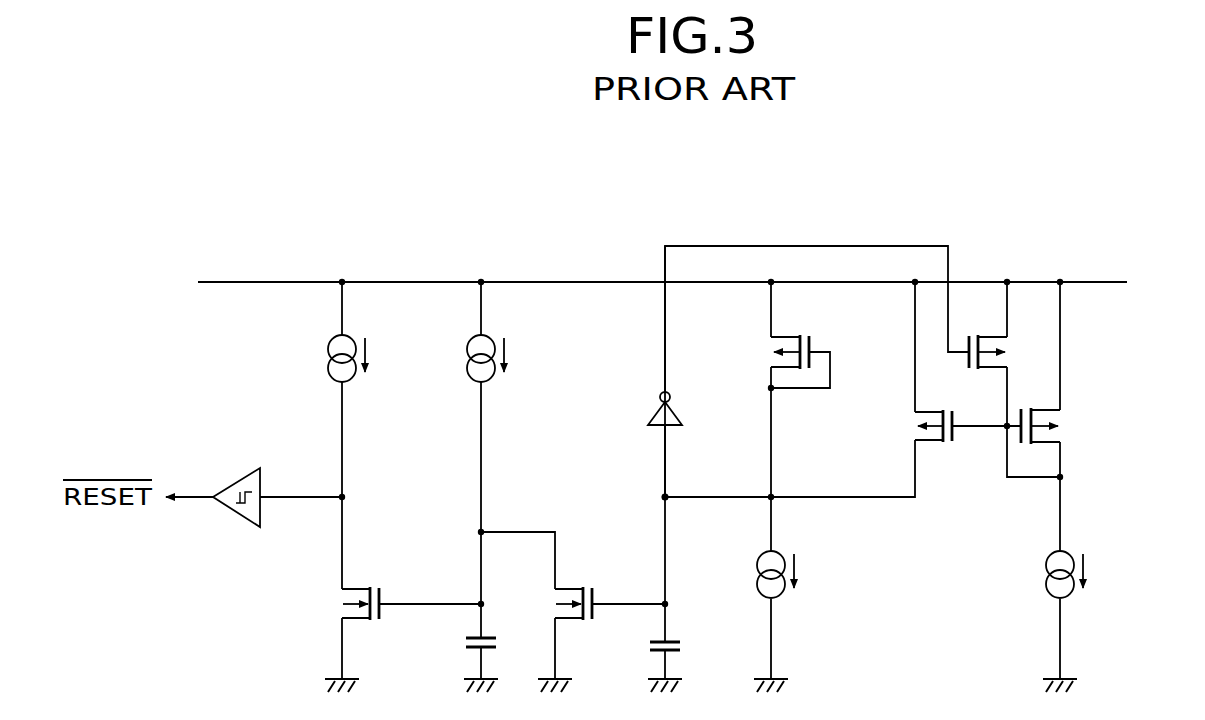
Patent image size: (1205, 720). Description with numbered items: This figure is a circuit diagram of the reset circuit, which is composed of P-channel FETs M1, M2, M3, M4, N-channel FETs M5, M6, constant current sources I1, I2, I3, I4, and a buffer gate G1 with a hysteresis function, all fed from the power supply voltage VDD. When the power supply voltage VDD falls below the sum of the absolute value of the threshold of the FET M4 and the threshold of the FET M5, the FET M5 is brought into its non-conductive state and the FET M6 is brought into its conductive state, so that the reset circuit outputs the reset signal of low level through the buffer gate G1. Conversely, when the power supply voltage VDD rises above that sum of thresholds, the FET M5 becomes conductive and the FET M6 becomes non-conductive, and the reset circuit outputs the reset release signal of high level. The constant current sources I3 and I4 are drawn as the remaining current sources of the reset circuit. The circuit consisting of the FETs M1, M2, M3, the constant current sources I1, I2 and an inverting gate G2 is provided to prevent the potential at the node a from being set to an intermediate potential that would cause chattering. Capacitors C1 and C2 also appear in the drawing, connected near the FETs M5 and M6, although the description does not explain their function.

The buffer gate G1 is at (238, 478).
The inverting gate G2 is at (678, 412).
The node a is at (668, 494).
The constant current source I1 is at (1077, 574).
The constant current source I2 is at (788, 574).
The constant current source I3 is at (498, 358).
The constant current source I4 is at (359, 358).
The P-channel FET M1 is at (1062, 424).
The P-channel FET M2 is at (938, 445).
The P-channel FET M3 is at (975, 334).
The P-channel FET M4 is at (787, 334).
The N-channel FET M5 is at (571, 588).
The N-channel FET M6 is at (358, 588).
The capacitor C1 is at (670, 662).
The capacitor C2 is at (490, 660).
The power supply voltage VDD is at (687, 285).